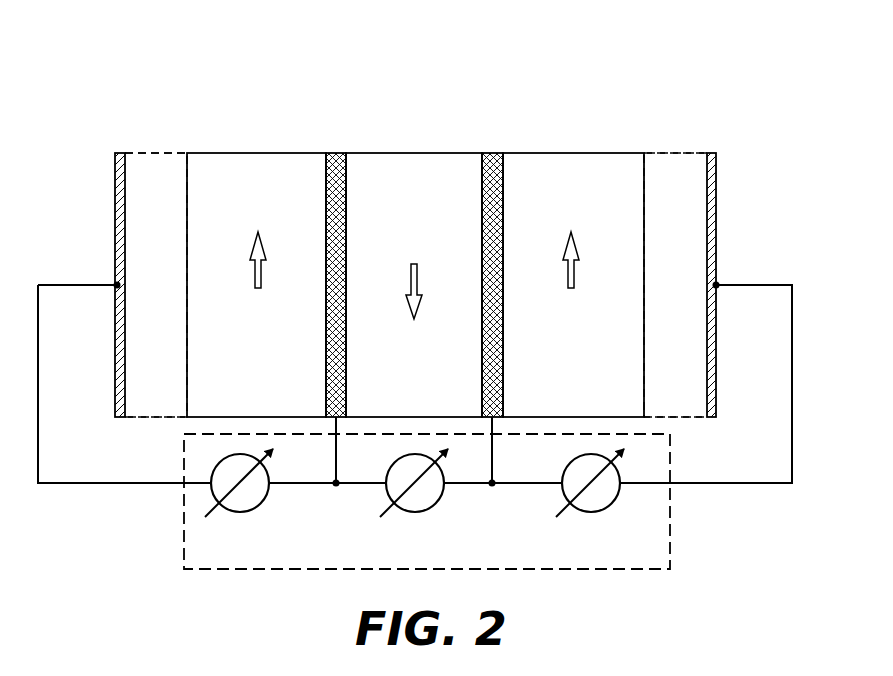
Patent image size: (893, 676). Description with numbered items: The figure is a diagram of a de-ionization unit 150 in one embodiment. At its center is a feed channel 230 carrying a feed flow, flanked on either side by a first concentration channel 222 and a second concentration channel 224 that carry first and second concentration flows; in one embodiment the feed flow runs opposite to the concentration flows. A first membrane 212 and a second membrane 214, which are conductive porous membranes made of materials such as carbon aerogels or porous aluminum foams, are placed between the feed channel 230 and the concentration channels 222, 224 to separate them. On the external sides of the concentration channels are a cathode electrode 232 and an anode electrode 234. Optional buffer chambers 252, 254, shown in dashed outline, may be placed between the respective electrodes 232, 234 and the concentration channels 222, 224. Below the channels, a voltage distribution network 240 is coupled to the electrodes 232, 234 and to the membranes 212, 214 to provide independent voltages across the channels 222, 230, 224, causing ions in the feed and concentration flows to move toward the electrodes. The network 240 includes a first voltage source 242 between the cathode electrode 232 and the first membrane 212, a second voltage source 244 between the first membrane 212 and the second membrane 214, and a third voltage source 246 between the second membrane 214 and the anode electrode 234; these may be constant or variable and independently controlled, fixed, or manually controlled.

The de-ionization unit 150 is at (694, 50).
The first membrane 212 is at (325, 188).
The second membrane 214 is at (481, 188).
The first concentration channel 222 is at (277, 152).
The second concentration channel 224 is at (597, 152).
The feed channel 230 is at (430, 152).
The cathode electrode 232 is at (115, 187).
The anode electrode 234 is at (717, 187).
The voltage distribution network 240 is at (183, 500).
The first voltage source 242 is at (238, 513).
The second voltage source 244 is at (413, 513).
The third voltage source 246 is at (590, 513).
The first buffer chamber 252 is at (154, 162).
The second buffer chamber 254 is at (657, 164).